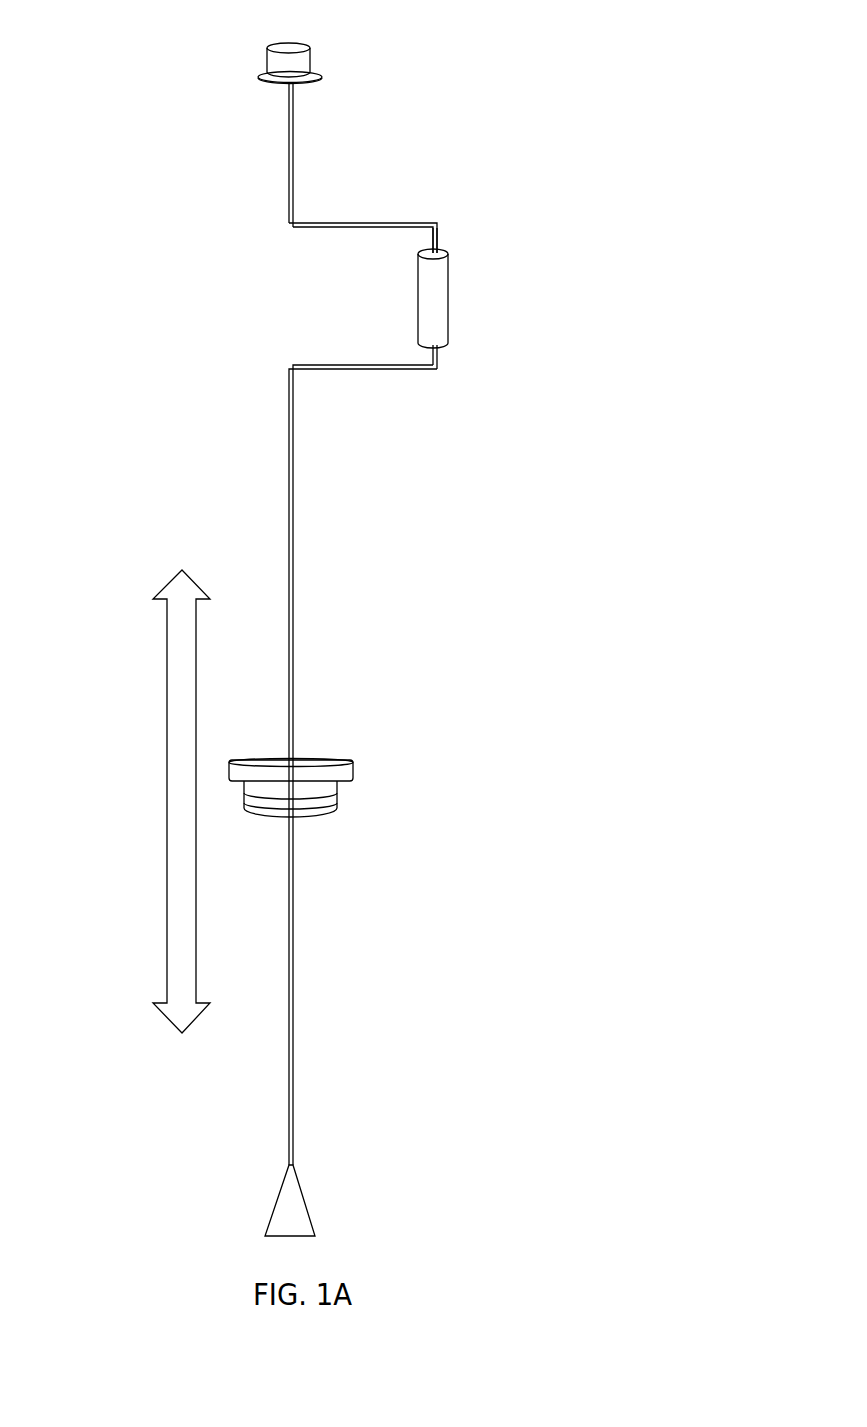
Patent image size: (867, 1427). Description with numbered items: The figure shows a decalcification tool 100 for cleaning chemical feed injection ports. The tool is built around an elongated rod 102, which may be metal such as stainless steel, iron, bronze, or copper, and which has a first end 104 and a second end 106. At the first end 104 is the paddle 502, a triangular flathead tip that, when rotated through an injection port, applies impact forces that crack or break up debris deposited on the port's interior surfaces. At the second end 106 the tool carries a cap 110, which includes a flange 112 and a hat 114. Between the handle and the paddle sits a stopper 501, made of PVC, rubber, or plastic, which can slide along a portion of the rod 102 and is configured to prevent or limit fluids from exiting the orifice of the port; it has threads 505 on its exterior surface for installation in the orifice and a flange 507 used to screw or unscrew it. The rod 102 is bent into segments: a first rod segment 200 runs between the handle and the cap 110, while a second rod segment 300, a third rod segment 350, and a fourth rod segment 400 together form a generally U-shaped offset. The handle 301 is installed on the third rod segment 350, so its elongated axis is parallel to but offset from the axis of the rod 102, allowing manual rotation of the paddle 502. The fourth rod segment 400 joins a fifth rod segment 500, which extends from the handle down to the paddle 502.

The decalcification tool 100 is at (115, 72).
The elongated rod 102 is at (263, 423).
The first end 104 is at (225, 1174).
The second end 106 is at (278, 92).
The cap 110 is at (323, 73).
The flange 112 is at (268, 83).
The hat 114 is at (300, 60).
The first rod segment 200 is at (308, 143).
The second rod segment 300 is at (348, 230).
The handle 301 is at (418, 298).
The third rod segment 350 is at (442, 235).
The fourth rod segment 400 is at (340, 372).
The fifth rod segment 500 is at (282, 538).
The stopper 501 is at (378, 790).
The paddle 502 is at (317, 1219).
The threads 505 is at (337, 797).
The flange 507 is at (345, 772).